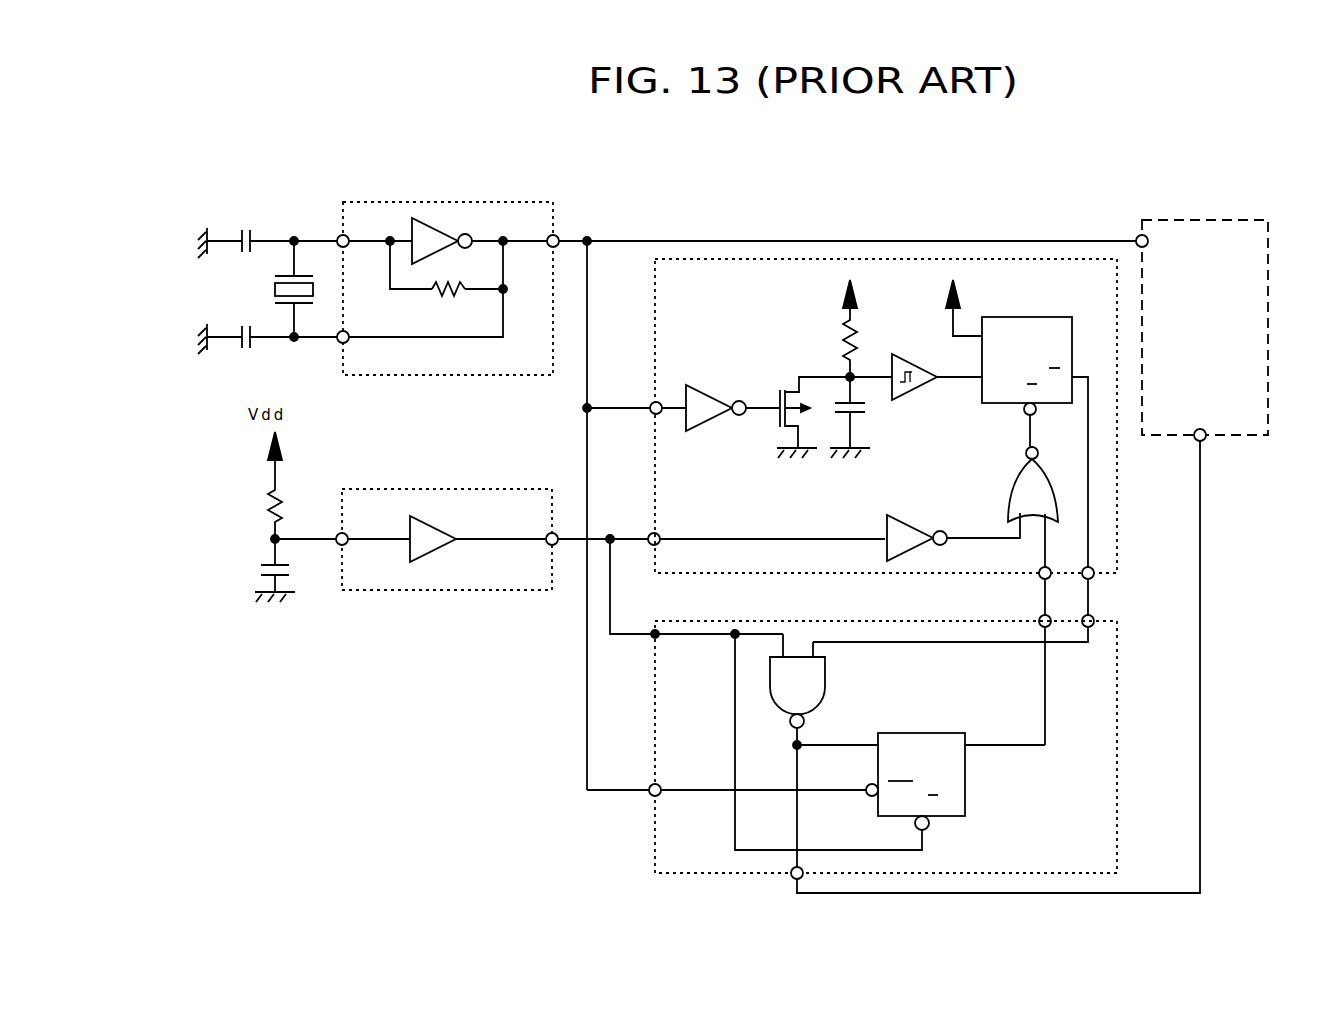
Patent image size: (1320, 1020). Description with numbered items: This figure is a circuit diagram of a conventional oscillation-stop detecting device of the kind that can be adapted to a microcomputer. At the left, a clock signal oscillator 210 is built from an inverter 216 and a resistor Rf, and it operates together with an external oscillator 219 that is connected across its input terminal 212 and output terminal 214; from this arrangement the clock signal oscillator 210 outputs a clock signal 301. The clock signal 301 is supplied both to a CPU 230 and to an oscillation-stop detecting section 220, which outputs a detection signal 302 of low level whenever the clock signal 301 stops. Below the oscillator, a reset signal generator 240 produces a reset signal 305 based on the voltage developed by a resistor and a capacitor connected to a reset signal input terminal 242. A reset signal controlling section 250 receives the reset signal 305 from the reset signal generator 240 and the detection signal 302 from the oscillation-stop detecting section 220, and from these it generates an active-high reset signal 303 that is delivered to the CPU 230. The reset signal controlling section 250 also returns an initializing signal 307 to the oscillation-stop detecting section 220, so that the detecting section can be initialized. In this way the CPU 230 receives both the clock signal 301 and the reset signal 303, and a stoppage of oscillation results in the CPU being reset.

The clock signal oscillator 210 is at (408, 256).
The input terminal 212 is at (338, 236).
The output terminal 214 is at (338, 343).
The inverter 216 is at (447, 230).
The oscillator 219 is at (272, 290).
The oscillation-stop detecting section 220 is at (774, 257).
The CPU 230 is at (1158, 222).
The reset signal generator 240 is at (421, 575).
The reset signal input terminal 242 is at (336, 550).
The reset signal controlling section 250 is at (653, 845).
The clock signal 301 is at (600, 236).
The detection signal 302 is at (1090, 603).
The reset signal 303 is at (1200, 546).
The reset signal 305 is at (612, 597).
The initializing signal 307 is at (1042, 599).